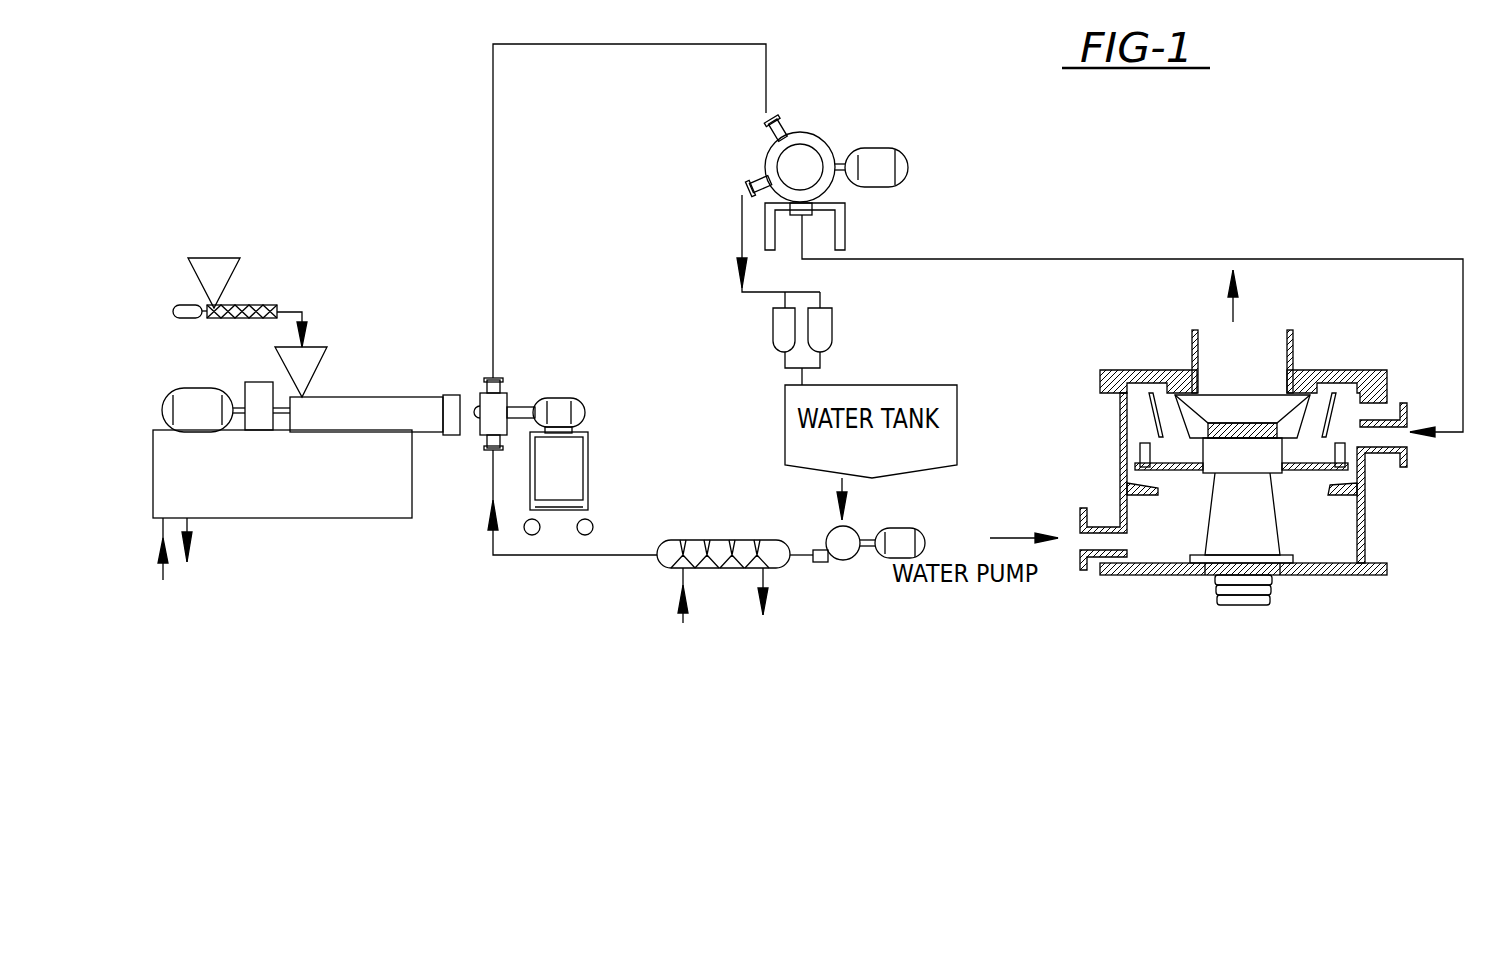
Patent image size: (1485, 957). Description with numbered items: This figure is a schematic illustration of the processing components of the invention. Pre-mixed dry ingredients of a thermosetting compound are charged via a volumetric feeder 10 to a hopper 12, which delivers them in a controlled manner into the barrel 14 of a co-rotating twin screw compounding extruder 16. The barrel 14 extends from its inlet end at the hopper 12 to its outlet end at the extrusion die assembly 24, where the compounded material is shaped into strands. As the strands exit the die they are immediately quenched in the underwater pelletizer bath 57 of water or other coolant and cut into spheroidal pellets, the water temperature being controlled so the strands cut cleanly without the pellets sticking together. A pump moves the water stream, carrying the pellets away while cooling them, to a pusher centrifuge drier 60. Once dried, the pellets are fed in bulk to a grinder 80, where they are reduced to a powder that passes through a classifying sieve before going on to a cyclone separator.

The volumetric feeder 10 is at (218, 258).
The hopper 12 is at (322, 360).
The barrel 14 is at (412, 396).
The co-rotating twin screw compounding extruder 16 is at (143, 440).
The extrusion die assembly 24 is at (507, 380).
The underwater pelletizer bath 57 is at (560, 398).
The pusher centrifuge drier 60 is at (820, 121).
The grinder 80 is at (1100, 350).